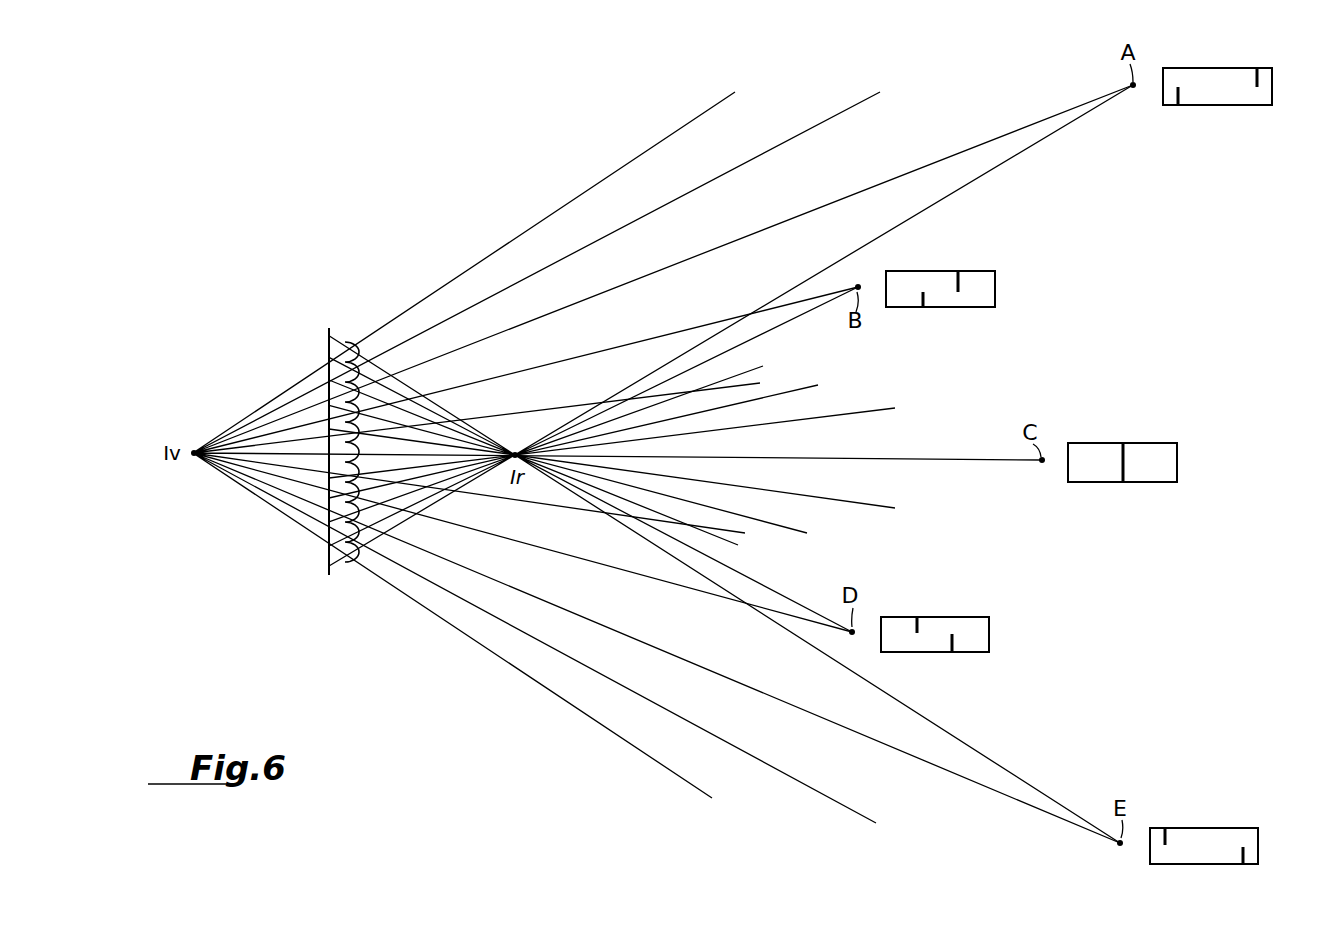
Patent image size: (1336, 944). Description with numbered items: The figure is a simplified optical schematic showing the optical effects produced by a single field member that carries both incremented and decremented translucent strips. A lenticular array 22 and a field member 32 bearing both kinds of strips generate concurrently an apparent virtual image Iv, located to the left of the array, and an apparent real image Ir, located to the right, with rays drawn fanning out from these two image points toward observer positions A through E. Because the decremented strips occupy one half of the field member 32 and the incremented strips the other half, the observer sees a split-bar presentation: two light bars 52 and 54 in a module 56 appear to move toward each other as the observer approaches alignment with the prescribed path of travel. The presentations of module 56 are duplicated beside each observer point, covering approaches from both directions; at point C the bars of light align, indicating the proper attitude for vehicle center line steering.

The lenticular array 22 is at (350, 340).
The field member 32 is at (329, 328).
The light bar 52 is at (1183, 95).
The light bar 54 is at (1256, 76).
The module 56 is at (1262, 97).